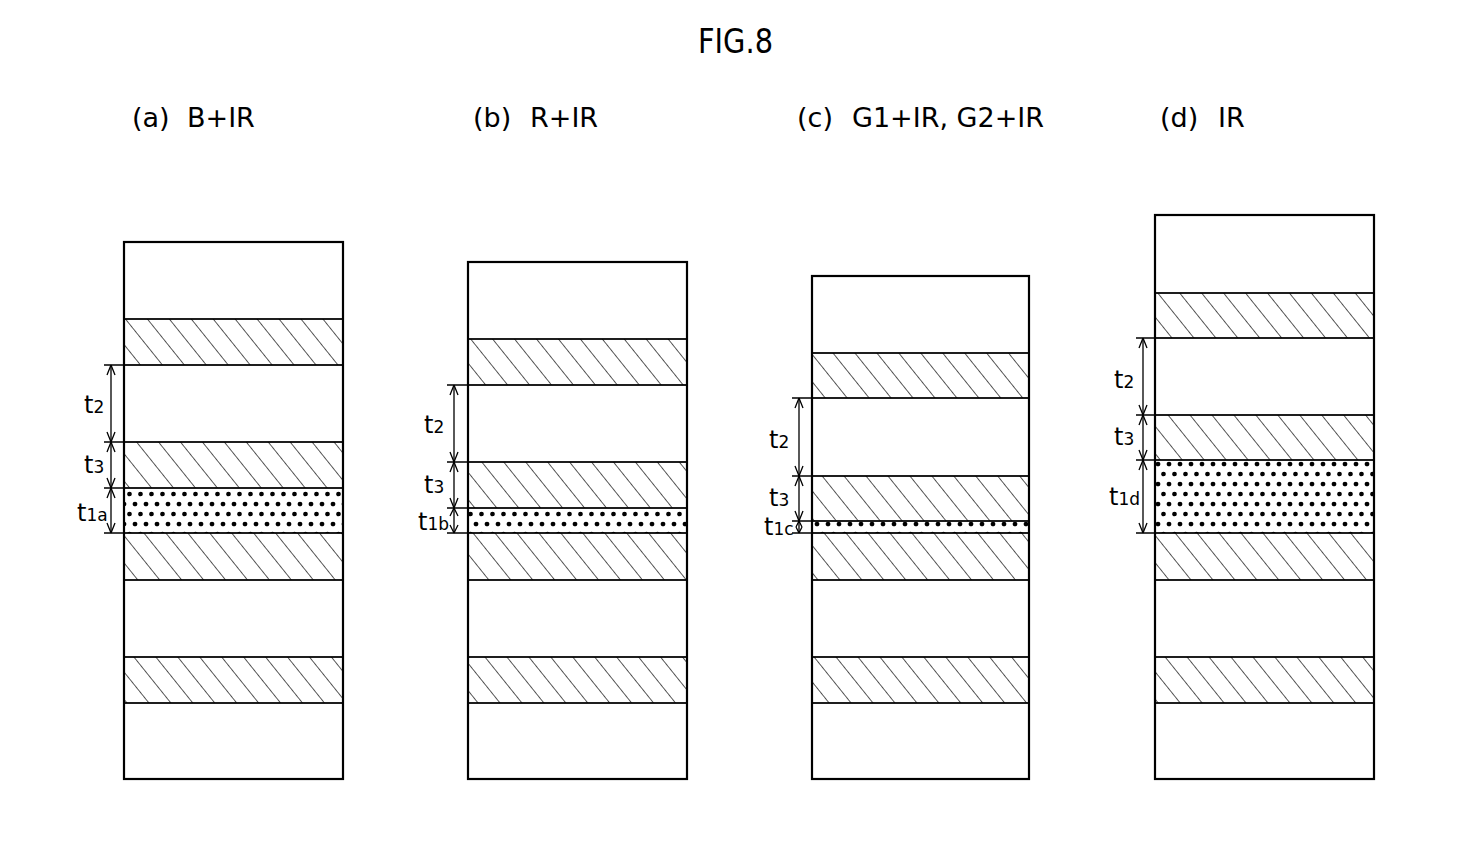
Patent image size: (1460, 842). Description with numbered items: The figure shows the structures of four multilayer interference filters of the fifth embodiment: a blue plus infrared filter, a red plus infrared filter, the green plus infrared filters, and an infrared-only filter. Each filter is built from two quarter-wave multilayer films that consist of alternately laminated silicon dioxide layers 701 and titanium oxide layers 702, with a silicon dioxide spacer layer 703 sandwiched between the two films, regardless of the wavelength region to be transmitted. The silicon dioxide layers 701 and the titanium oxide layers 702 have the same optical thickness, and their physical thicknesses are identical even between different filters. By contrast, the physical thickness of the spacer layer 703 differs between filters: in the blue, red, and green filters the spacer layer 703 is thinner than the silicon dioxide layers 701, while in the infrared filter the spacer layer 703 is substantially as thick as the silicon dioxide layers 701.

In FIG. 8A, the silicon dioxide layer 701 is at (335, 286).
In FIG. 8B, the silicon dioxide layer 701 is at (679, 305).
In FIG. 8C, the silicon dioxide layer 701 is at (1022, 320).
In FIG. 8D, the silicon dioxide layer 701 is at (1366, 258).
In FIG. 8A, the titanium oxide layer 702 is at (335, 346).
In FIG. 8B, the titanium oxide layer 702 is at (679, 365).
In FIG. 8C, the titanium oxide layer 702 is at (1022, 378).
In FIG. 8D, the titanium oxide layer 702 is at (1366, 318).
In FIG. 8A, the spacer layer 703 is at (335, 513).
In FIG. 8B, the spacer layer 703 is at (679, 523).
In FIG. 8C, the spacer layer 703 is at (1022, 533).
In FIG. 8D, the spacer layer 703 is at (1366, 500).